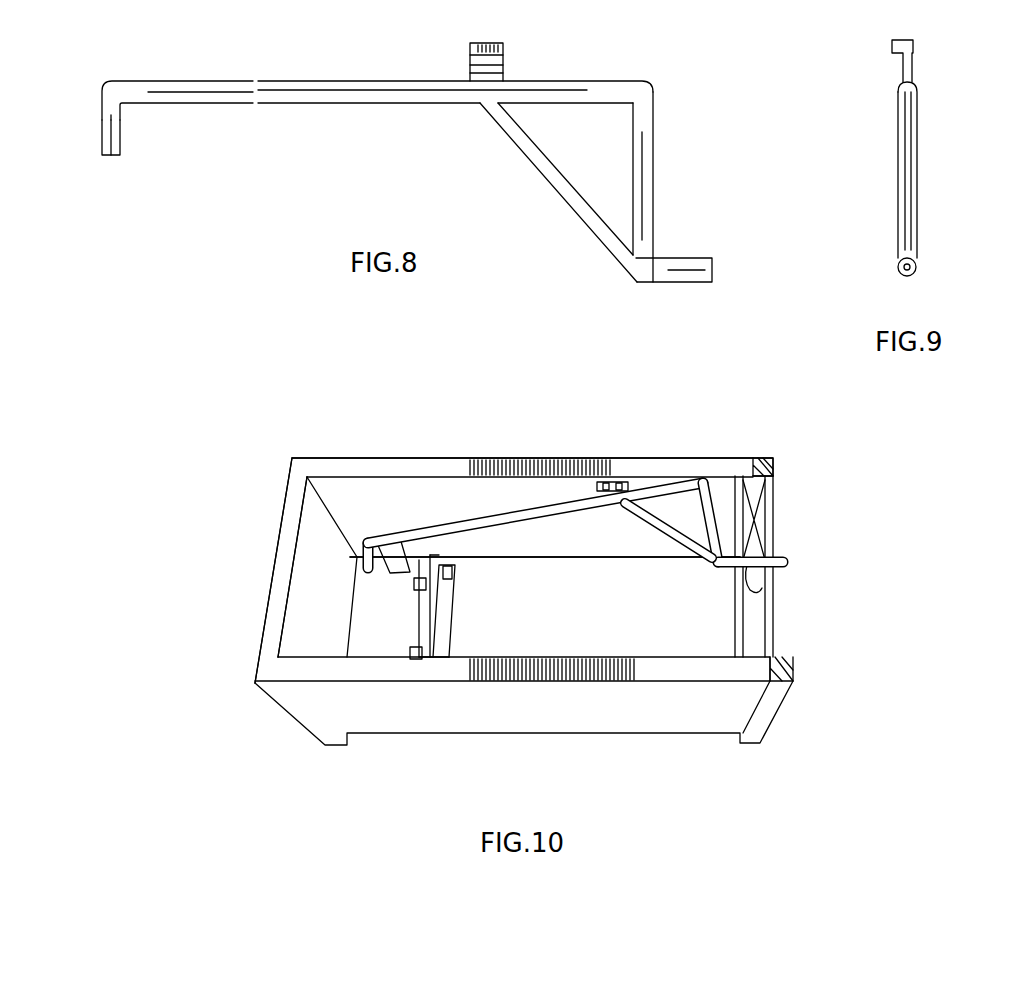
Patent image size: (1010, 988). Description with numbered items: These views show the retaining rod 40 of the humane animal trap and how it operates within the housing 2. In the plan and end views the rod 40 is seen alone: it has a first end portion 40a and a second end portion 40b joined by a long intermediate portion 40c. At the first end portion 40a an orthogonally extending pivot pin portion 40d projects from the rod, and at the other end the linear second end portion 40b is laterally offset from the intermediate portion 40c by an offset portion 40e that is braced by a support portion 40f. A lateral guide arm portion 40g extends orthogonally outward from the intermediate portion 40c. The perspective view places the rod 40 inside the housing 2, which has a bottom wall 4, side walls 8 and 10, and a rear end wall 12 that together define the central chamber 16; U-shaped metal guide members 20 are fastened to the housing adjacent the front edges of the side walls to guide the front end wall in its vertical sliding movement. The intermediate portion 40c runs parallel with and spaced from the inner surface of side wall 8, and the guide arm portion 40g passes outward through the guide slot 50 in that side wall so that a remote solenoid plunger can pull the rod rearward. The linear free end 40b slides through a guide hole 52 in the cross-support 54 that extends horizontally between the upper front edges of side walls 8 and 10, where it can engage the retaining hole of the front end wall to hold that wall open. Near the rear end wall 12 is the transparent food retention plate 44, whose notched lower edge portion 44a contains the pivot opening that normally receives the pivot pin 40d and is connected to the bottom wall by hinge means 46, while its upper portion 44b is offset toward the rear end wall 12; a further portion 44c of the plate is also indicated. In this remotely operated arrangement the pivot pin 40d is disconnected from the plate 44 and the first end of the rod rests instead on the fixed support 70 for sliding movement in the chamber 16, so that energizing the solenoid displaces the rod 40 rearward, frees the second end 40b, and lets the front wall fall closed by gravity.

In FIG. 10, the housing 2 is at (290, 456).
In FIG. 10, the bottom wall 4 is at (628, 632).
In FIG. 10, the side wall 8 is at (540, 462).
In FIG. 10, the side wall 10 is at (530, 588).
In FIG. 10, the rear end wall 12 is at (300, 570).
In FIG. 10, the central chamber 16 is at (685, 621).
In FIG. 10, the guide members 20 is at (775, 460).
In FIG. 8, the retaining rod 40 is at (373, 178).
In FIG. 10, the retaining rod 40 is at (526, 487).
In FIG. 8, the first end portion 40a is at (147, 92).
In FIG. 8, the second end portion 40b is at (673, 270).
In FIG. 9, the second end portion 40b is at (913, 270).
In FIG. 10, the second end portion 40b is at (785, 555).
In FIG. 8, the intermediate portion 40c is at (413, 100).
In FIG. 10, the intermediate portion 40c is at (520, 522).
In FIG. 8, the pivot pin portion 40d is at (104, 134).
In FIG. 10, the pivot pin portion 40d is at (360, 540).
In FIG. 8, the offset portion 40e is at (645, 168).
In FIG. 9, the offset portion 40e is at (912, 180).
In FIG. 10, the offset portion 40e is at (706, 500).
In FIG. 8, the support portion 40f is at (538, 172).
In FIG. 10, the support portion 40f is at (665, 530).
In FIG. 8, the lateral guide arm portion 40g is at (508, 44).
In FIG. 10, the lateral guide arm portion 40g is at (616, 484).
In FIG. 10, the food retention plate 44 is at (338, 597).
In FIG. 10, the notched portion 44a is at (412, 605).
In FIG. 10, the upper portion 44b is at (442, 632).
In FIG. 10, the holder top 44c is at (433, 548).
In FIG. 10, the hinge means 46 is at (405, 656).
In FIG. 10, the guide slot 50 is at (598, 480).
In FIG. 10, the guide hole 52 is at (760, 582).
In FIG. 10, the cross-support 54 is at (776, 606).
In FIG. 10, the fixed support 70 is at (405, 540).